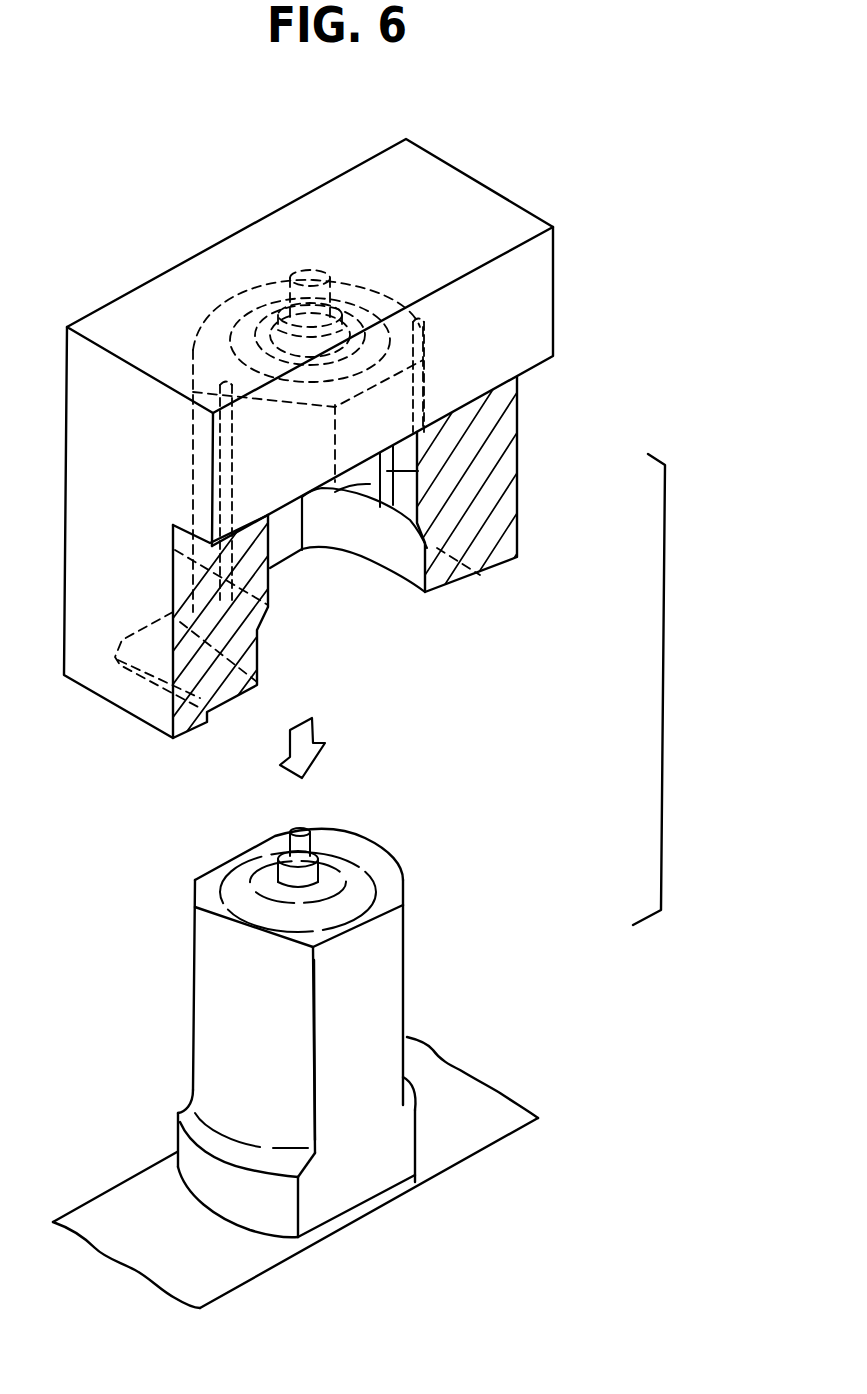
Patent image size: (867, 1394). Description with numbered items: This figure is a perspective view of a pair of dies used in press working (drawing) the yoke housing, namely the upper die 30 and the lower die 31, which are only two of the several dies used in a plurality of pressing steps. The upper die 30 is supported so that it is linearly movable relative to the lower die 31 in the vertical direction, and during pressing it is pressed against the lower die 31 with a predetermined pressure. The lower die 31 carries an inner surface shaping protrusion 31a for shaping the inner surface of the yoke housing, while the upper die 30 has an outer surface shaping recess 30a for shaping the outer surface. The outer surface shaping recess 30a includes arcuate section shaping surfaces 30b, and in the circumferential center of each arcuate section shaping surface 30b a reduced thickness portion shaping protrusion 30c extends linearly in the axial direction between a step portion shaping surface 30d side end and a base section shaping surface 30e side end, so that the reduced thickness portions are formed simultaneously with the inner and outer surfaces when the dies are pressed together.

The upper die 30 is at (75, 372).
The outer surface shaping recess 30a is at (398, 560).
The arcuate section shaping surface 30b is at (370, 485).
The reduced thickness portion shaping protrusion 30c is at (225, 457).
The step portion shaping surface 30d is at (355, 494).
The base section shaping surface 30e is at (420, 318).
The lower die 31 is at (92, 1208).
The inner surface shaping protrusion 31a is at (390, 967).